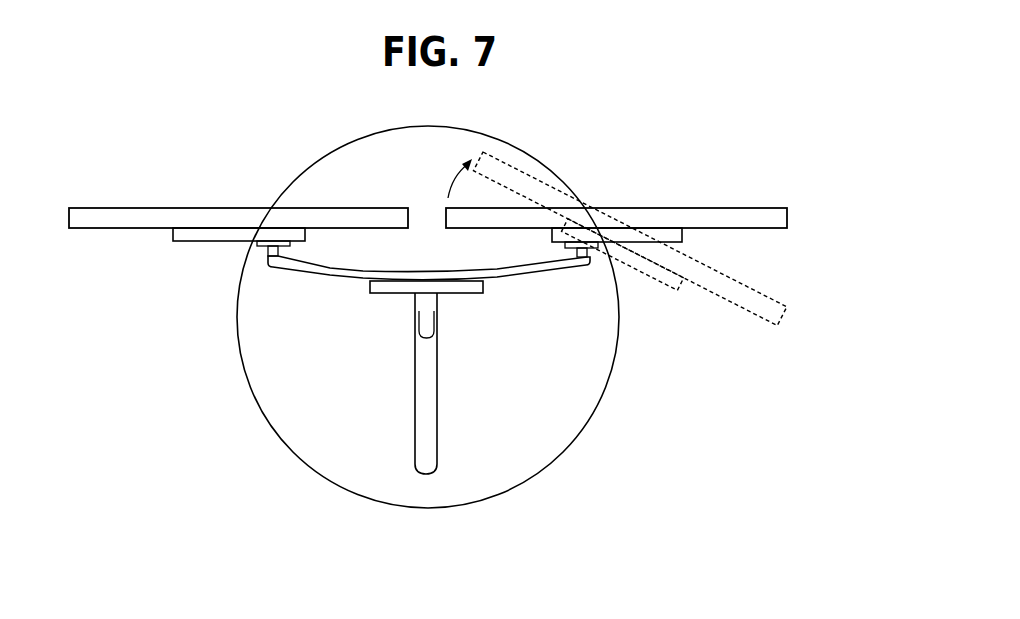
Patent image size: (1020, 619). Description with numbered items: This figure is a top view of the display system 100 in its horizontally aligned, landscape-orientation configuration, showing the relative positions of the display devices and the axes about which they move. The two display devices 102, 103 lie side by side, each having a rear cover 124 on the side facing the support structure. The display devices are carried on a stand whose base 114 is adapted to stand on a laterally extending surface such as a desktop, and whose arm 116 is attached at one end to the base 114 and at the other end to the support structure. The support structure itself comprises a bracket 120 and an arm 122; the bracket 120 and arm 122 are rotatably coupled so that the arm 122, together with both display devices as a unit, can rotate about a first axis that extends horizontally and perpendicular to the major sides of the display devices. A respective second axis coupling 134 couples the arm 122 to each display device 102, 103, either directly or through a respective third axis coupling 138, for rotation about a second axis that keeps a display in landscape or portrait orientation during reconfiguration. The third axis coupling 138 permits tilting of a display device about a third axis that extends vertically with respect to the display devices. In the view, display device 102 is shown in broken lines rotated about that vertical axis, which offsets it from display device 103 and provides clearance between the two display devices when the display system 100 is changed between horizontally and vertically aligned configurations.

The display system 100 is at (656, 140).
The display device 102 is at (747, 213).
The display device 103 is at (165, 213).
The base 114 is at (543, 423).
The arm 116 is at (422, 388).
The bracket 120 is at (408, 285).
The arm 122 is at (307, 271).
The rear cover 124 is at (188, 232).
The second axis coupling 134 is at (258, 226).
The third axis coupling 138 is at (256, 259).